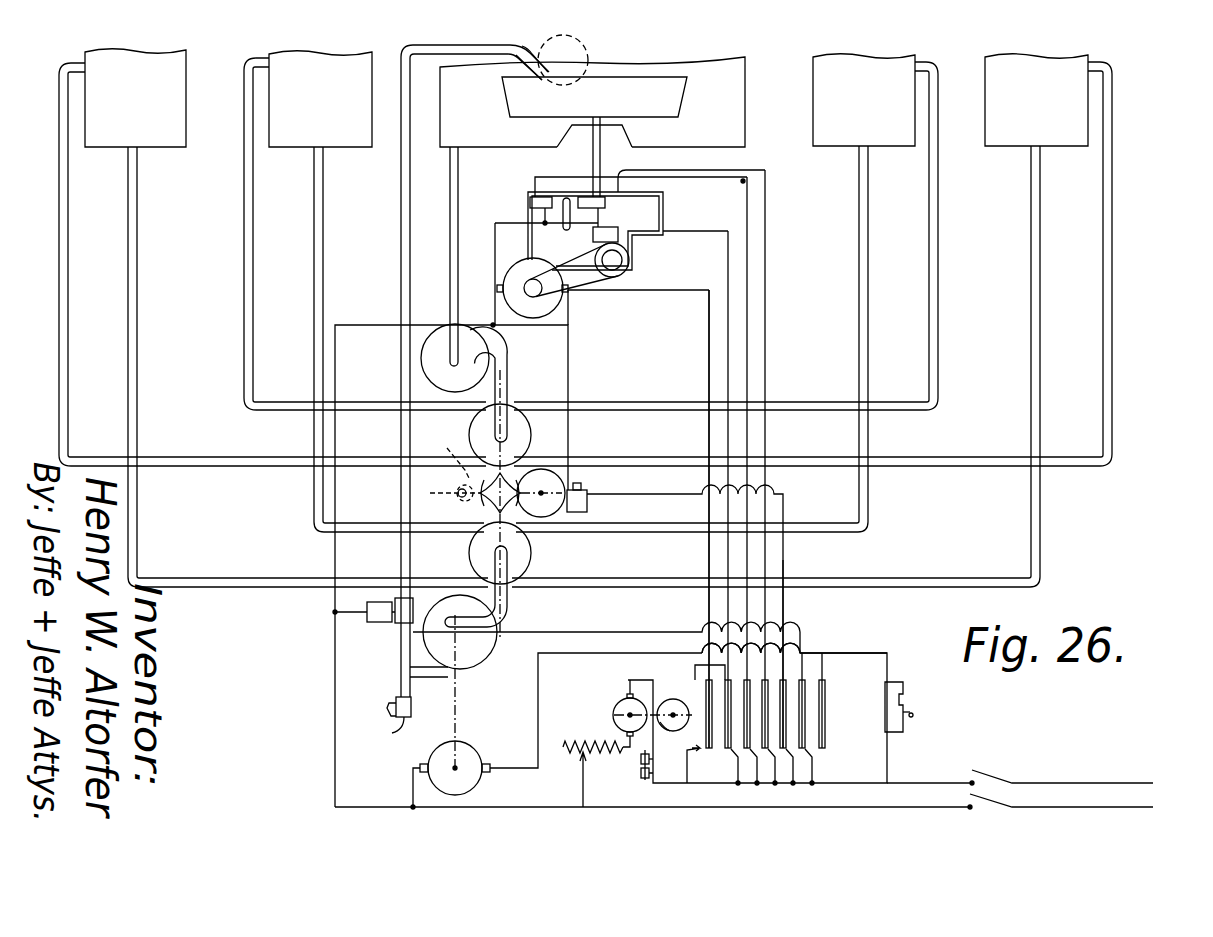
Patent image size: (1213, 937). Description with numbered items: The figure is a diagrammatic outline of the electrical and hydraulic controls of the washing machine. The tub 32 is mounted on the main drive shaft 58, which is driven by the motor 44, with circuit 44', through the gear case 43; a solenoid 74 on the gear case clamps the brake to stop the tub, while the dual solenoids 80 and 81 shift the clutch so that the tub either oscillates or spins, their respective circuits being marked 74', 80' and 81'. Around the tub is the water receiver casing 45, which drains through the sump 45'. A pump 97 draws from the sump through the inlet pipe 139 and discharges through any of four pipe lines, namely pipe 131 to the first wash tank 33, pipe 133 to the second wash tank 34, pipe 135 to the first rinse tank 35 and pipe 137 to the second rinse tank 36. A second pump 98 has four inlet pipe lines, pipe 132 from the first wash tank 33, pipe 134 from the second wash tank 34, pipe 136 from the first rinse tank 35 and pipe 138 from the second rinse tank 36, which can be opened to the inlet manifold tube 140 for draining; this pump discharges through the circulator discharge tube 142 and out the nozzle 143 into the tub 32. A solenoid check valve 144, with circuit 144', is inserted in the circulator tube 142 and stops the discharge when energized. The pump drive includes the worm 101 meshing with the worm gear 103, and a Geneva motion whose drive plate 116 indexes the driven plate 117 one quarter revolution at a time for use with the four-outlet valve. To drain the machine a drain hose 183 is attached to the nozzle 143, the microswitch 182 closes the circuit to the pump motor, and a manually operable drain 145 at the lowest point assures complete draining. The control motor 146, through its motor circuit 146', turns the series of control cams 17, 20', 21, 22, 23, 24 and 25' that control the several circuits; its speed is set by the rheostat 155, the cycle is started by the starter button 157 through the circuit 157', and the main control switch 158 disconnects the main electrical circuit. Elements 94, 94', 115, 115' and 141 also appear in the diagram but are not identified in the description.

The first wash tank 33 is at (146, 141).
The second wash tank 34 is at (333, 141).
The first rinse tank 35 is at (876, 134).
The second rinse tank 36 is at (1043, 134).
The tub 32 is at (687, 93).
The water receiver casing 45 is at (617, 105).
The sump 45' is at (550, 132).
The nozzle 143 is at (527, 52).
The drain hose 183 is at (590, 46).
The main drive shaft 58 is at (592, 158).
The inlet pipe 139 is at (458, 168).
The solenoid 80 is at (611, 200).
The solenoid 81 is at (664, 200).
The gear case 43 is at (663, 213).
The solenoid 74 is at (660, 245).
The motor 44 is at (603, 281).
The pipe line 131 is at (69, 243).
The inlet pipe line 132 is at (138, 243).
The pipe line 133 is at (244, 307).
The inlet pipe line 134 is at (324, 193).
The pipe line 135 is at (938, 175).
The inlet pipe line 136 is at (859, 202).
The pipe line 137 is at (1112, 176).
The inlet pipe line 138 is at (1031, 229).
The circulator discharge tube 142 is at (401, 262).
The pump 97 is at (478, 350).
The tube 141 is at (508, 382).
The worm gear 103 is at (441, 455).
The worm shaft 101 is at (456, 493).
The driven plate 117 is at (470, 500).
The solenoid 115 is at (675, 615).
The drive plate 116 is at (547, 516).
The inlet manifold tube 140 is at (520, 606).
The pump 98 is at (478, 642).
The solenoid check valve 144 is at (373, 633).
The manually operable drain 145 is at (408, 717).
The motor 94 is at (468, 756).
The circuit 81' is at (796, 459).
The circuit 80' is at (784, 462).
The circuit 74' is at (697, 489).
The conductor 115' is at (822, 644).
The circuit 44' is at (606, 519).
The circuit 144' is at (781, 624).
The conductor 94' is at (843, 636).
The control cam 17 is at (690, 766).
The control cam 20' is at (716, 533).
The control cam 21 is at (740, 732).
The control cam 22 is at (759, 732).
The control cam 23 is at (778, 732).
The control cam 24 is at (796, 732).
The control cam 25' is at (831, 719).
The control motor 146 is at (611, 713).
The motor circuit 146' is at (649, 692).
The rheostat 155 is at (598, 750).
The starter button 157 is at (627, 778).
The circuit 157' is at (619, 761).
The microswitch 182 is at (905, 703).
The main control switch 158 is at (1009, 767).